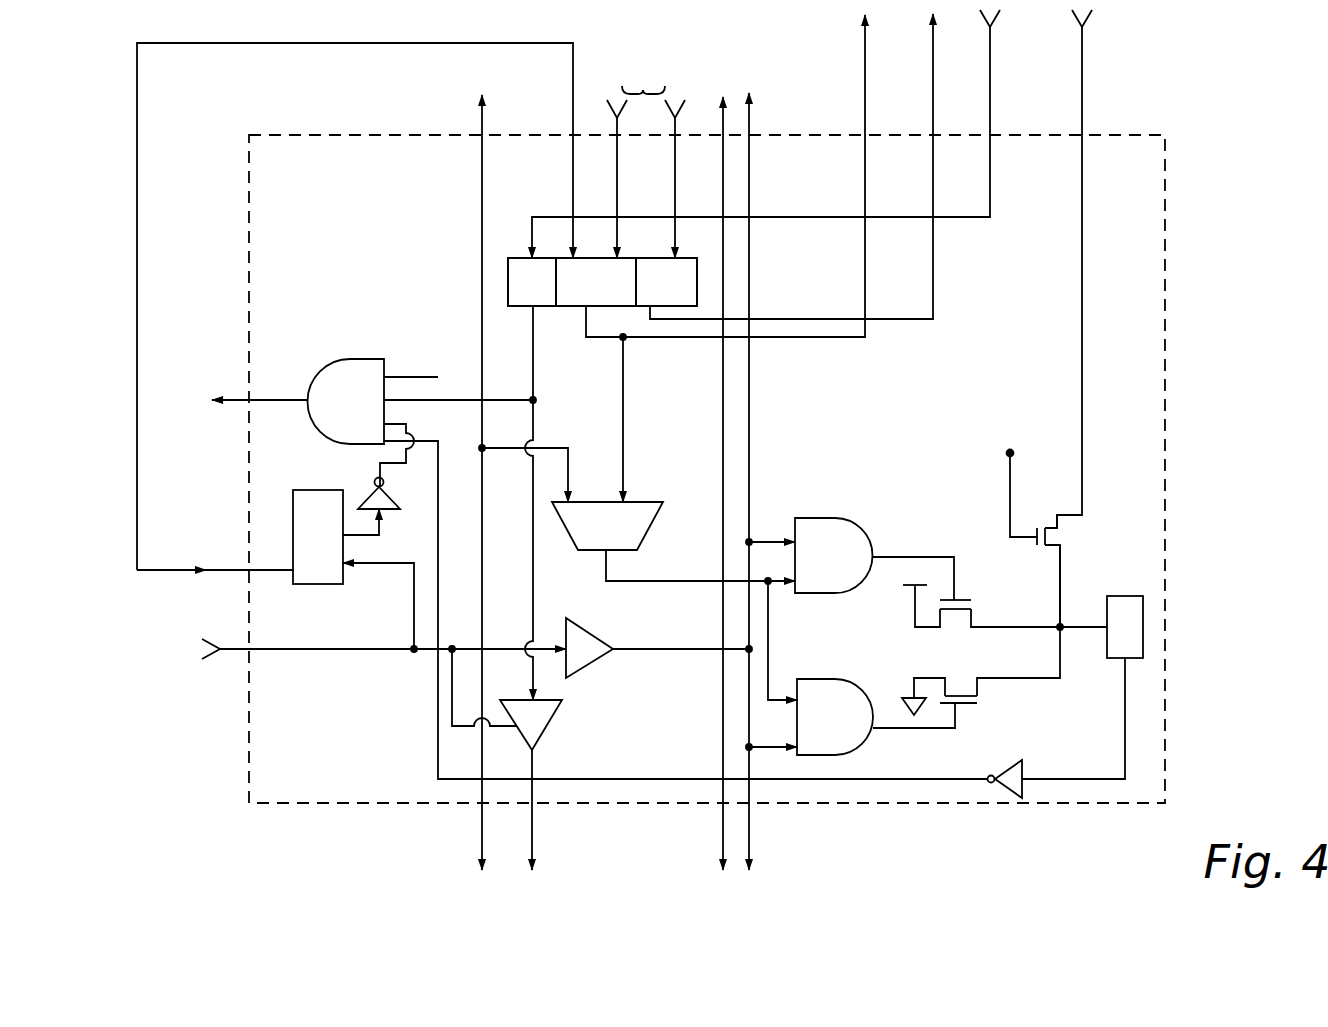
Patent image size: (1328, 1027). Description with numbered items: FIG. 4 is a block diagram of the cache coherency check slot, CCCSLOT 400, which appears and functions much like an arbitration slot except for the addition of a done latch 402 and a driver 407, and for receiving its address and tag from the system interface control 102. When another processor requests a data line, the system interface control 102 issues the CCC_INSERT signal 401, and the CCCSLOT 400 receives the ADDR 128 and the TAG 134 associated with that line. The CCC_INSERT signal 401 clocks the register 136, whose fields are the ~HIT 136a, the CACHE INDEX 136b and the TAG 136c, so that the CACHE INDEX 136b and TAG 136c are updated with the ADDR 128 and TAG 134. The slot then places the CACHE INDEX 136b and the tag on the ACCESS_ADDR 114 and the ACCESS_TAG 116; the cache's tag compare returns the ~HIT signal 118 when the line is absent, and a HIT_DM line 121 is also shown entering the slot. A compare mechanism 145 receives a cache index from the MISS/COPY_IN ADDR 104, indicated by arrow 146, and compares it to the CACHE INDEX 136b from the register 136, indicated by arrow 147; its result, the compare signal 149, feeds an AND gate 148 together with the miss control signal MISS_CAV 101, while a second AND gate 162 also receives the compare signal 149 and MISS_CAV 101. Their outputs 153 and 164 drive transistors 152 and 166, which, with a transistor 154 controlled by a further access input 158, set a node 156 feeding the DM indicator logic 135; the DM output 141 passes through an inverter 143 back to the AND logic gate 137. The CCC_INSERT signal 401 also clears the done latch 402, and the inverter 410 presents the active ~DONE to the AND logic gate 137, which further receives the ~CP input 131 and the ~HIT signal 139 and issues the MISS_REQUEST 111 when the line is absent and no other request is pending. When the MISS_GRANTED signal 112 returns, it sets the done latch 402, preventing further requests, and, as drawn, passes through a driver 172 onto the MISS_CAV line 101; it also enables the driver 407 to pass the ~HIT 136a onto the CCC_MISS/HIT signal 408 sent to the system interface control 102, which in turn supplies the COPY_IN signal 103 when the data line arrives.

The cache coherency check slot 400 is at (1160, 105).
The CCC_INSERT signal 401 is at (230, 43).
The system interface control 102 is at (378, 330).
The address 128 is at (618, 157).
The tag 134 is at (677, 157).
The register 136 is at (700, 277).
The ~HIT field 136a is at (523, 270).
The CACHE INDEX field 136b is at (607, 260).
The TAG field 136c is at (657, 259).
The ACCESS_ADDR 114 is at (866, 140).
The ACCESS_TAG 116 is at (932, 153).
The ~HIT signal 118 is at (988, 80).
The HIT_DM line 121 is at (1082, 143).
The MISS/COPY_IN ADDR 104 is at (478, 820).
The COPY_IN control signal 103 is at (722, 827).
The MISS_CAV miss control signal 101 is at (750, 827).
The ~HIT signal 139 is at (537, 345).
The AND logic gate 137 is at (377, 362).
The ~CP input line 131 is at (432, 373).
The MISS_REQUEST signal 111 is at (297, 447).
The done latch 402 is at (303, 512).
The inverter 410 is at (383, 497).
The cache index input arrow 146 is at (567, 442).
The register cache index arrow 147 is at (623, 433).
The compare mechanism 145 is at (590, 533).
The compare signal 149 is at (673, 578).
The AND gate 148 is at (818, 527).
The AND gate output line 153 is at (930, 557).
The transistor 152 is at (963, 610).
The transistor 154 is at (1050, 535).
The transistor output line 156 is at (1058, 563).
The ACCESS_+2 input 158 is at (1010, 490).
The DM indicator logic 135 is at (1118, 633).
The DM output line 141 is at (1123, 690).
The inverter 143 is at (1022, 762).
The AND gate 162 is at (828, 692).
The AND gate output line 164 is at (897, 730).
The transistor 166 is at (955, 688).
The MISS_GRANTED signal 112 is at (305, 653).
The buffer 172 is at (585, 640).
The driver 407 is at (543, 717).
The CCC_MISS/HIT signal 408 is at (532, 827).